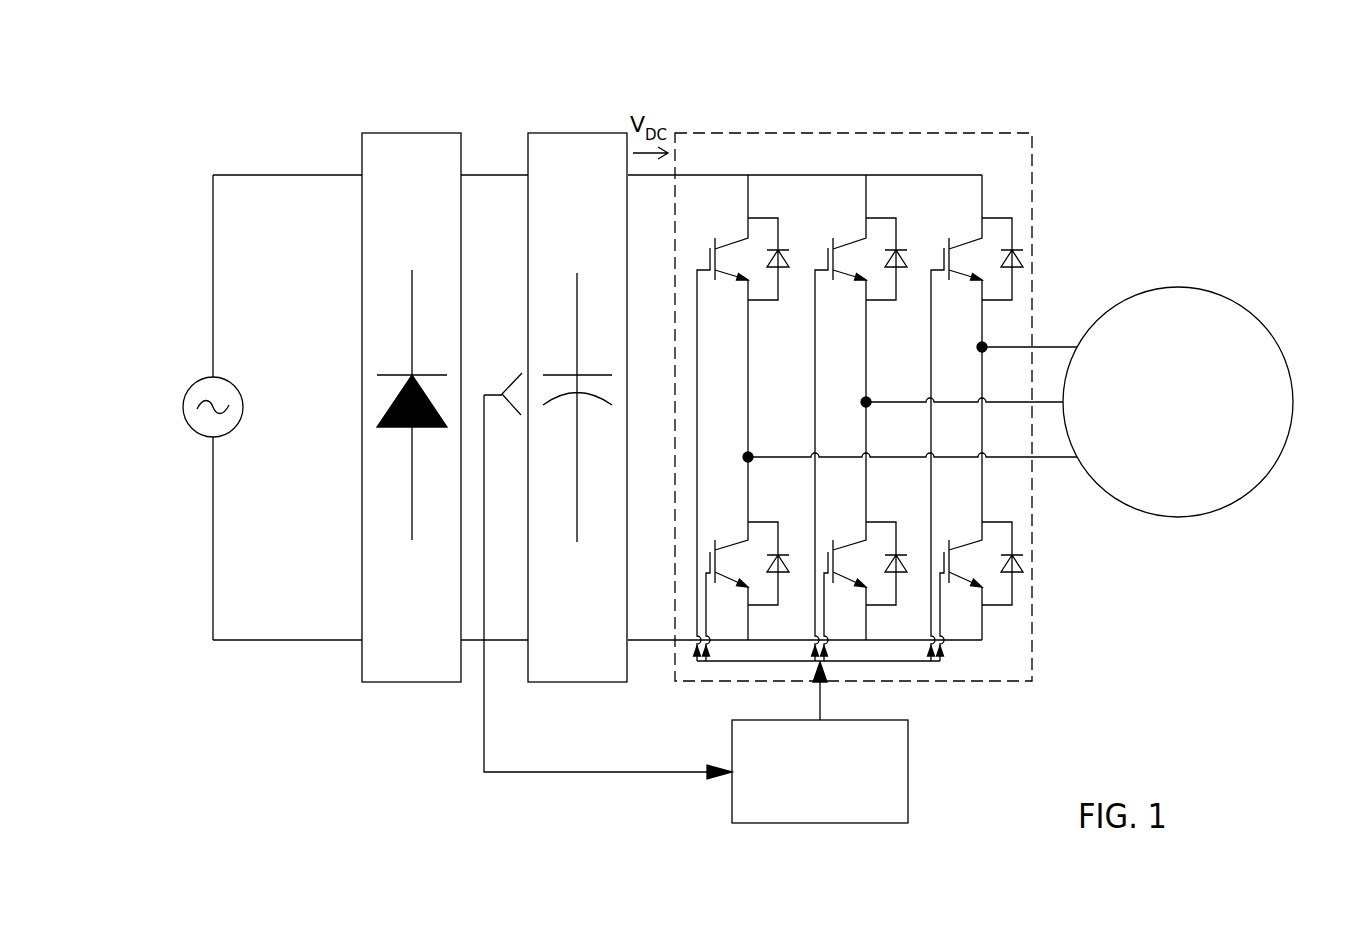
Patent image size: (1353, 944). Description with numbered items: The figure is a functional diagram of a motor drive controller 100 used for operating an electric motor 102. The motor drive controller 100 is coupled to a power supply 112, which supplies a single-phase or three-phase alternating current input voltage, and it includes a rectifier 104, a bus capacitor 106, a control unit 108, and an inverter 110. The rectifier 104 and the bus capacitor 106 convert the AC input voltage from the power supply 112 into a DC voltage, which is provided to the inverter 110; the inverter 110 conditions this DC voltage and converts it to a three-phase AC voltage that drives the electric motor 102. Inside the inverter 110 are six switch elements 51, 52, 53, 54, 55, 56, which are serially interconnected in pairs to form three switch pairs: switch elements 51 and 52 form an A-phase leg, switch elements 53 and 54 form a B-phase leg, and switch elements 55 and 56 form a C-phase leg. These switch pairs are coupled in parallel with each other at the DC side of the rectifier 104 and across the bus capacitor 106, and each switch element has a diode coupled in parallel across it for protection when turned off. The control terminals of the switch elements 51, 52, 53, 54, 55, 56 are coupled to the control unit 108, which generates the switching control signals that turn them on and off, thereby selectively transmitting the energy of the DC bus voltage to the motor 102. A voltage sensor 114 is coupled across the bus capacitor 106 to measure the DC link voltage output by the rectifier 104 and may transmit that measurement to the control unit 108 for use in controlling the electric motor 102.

The motor drive controller 100 is at (1070, 81).
The electric motor 102 is at (1178, 287).
The rectifier 104 is at (386, 133).
The bus capacitor 106 is at (553, 133).
The control unit 108 is at (870, 720).
The inverter 110 is at (888, 133).
The power supply 112 is at (218, 379).
The voltage sensor 114 is at (508, 383).
The switch element 51 is at (737, 240).
The switch element 52 is at (737, 542).
The switch element 53 is at (855, 240).
The switch element 54 is at (855, 542).
The switch element 55 is at (971, 240).
The switch element 56 is at (971, 542).